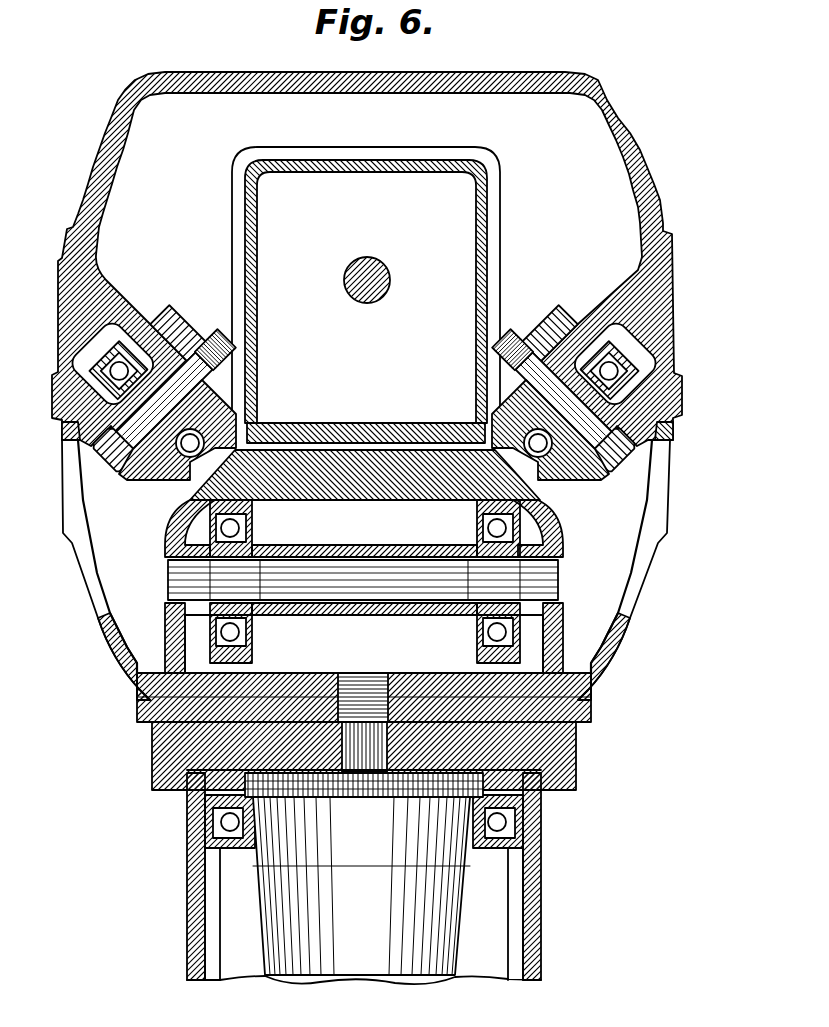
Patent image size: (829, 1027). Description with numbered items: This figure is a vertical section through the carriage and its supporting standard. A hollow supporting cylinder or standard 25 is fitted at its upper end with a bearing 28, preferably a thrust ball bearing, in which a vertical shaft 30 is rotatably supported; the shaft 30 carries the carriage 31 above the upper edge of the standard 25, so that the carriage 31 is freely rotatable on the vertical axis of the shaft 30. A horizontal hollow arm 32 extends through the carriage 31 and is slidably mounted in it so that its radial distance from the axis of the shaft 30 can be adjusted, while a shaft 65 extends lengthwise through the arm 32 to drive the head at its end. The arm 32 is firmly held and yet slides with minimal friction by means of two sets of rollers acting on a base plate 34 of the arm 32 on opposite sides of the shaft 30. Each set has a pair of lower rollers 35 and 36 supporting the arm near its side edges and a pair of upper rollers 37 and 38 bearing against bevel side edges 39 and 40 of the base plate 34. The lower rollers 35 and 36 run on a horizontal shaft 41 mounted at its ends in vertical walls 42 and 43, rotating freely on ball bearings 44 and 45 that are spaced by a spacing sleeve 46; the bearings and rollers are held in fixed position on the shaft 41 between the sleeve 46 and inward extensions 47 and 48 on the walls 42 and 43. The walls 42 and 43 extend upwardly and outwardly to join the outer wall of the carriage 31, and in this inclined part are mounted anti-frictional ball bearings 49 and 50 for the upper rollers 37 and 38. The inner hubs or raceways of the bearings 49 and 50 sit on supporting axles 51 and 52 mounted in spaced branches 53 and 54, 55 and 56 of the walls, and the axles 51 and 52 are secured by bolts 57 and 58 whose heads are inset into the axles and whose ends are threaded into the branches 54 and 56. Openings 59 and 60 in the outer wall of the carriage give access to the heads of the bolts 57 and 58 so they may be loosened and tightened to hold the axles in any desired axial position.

The carriage 31 is at (190, 71).
The horizontal hollow arm 32 is at (355, 158).
The shaft 65 is at (367, 303).
The bevel side edge 39 is at (255, 425).
The bevel side edge 40 is at (478, 425).
The base plate 34 is at (342, 462).
The branch 54 is at (116, 335).
The upper roller 37 is at (133, 360).
The anti-frictional ball bearing 49 is at (170, 330).
The branch 56 is at (604, 300).
The upper roller 38 is at (585, 345).
The anti-frictional ball bearing 50 is at (585, 375).
The branch 53 is at (62, 428).
The branch 55 is at (674, 422).
The bolt 57 is at (98, 456).
The bolt 58 is at (630, 456).
The supporting axle 51 is at (125, 480).
The supporting axle 52 is at (638, 480).
The inward extension 47 is at (172, 540).
The inward extension 48 is at (566, 536).
The spacing sleeve 46 is at (323, 549).
The ball bearing 44 is at (252, 528).
The ball bearing 45 is at (477, 528).
The horizontal shaft 41 is at (360, 566).
The vertical wall 42 is at (175, 625).
The vertical wall 43 is at (563, 606).
The lower roller 35 is at (252, 655).
The lower roller 36 is at (477, 655).
The opening 59 is at (97, 597).
The opening 60 is at (655, 590).
The hollow supporting cylinder or standard 25 is at (187, 866).
The bearing 28 is at (523, 835).
The vertical shaft 30 is at (364, 878).